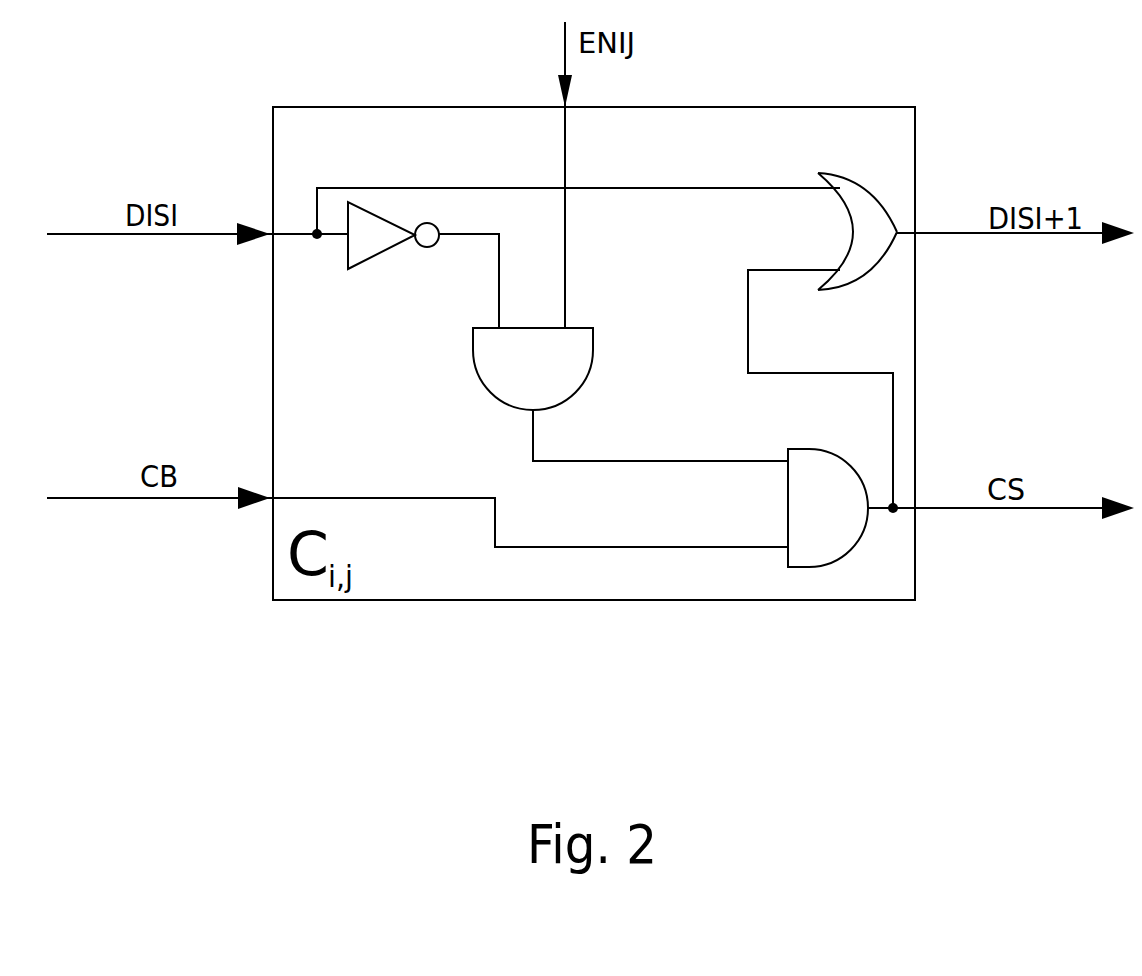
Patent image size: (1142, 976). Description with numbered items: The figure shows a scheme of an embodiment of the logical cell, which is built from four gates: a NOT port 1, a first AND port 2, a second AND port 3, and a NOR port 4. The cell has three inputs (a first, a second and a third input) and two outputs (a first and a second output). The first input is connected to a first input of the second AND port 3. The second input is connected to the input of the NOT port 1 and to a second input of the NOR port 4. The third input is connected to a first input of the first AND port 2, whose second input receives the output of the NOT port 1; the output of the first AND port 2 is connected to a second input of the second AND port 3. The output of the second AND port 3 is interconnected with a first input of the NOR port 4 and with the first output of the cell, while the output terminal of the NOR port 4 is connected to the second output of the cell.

The NOT port 1 is at (423, 265).
The first AND port 2 is at (630, 394).
The second AND port 3 is at (941, 418).
The NOR port 4 is at (976, 231).